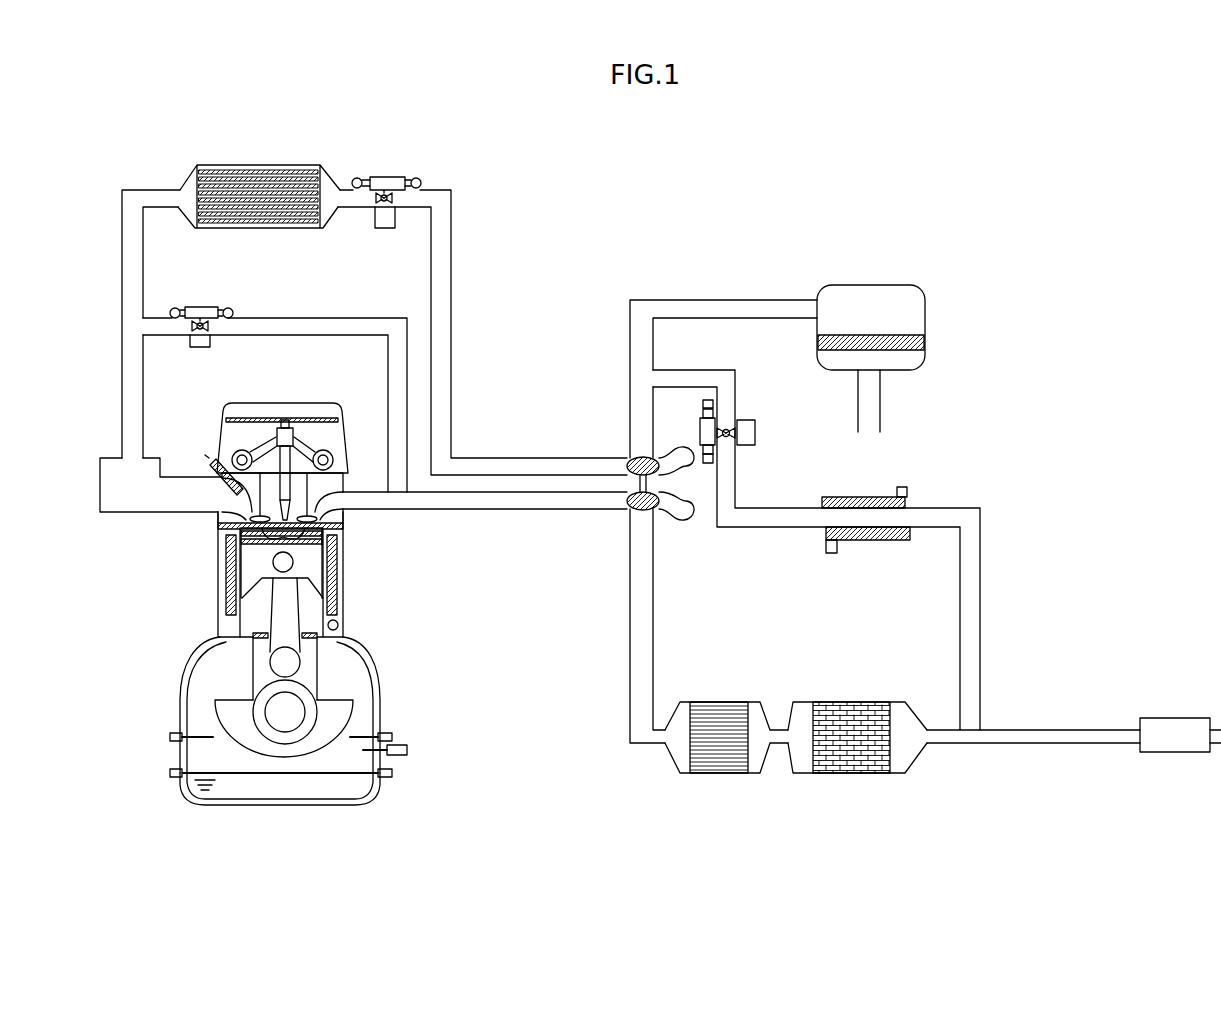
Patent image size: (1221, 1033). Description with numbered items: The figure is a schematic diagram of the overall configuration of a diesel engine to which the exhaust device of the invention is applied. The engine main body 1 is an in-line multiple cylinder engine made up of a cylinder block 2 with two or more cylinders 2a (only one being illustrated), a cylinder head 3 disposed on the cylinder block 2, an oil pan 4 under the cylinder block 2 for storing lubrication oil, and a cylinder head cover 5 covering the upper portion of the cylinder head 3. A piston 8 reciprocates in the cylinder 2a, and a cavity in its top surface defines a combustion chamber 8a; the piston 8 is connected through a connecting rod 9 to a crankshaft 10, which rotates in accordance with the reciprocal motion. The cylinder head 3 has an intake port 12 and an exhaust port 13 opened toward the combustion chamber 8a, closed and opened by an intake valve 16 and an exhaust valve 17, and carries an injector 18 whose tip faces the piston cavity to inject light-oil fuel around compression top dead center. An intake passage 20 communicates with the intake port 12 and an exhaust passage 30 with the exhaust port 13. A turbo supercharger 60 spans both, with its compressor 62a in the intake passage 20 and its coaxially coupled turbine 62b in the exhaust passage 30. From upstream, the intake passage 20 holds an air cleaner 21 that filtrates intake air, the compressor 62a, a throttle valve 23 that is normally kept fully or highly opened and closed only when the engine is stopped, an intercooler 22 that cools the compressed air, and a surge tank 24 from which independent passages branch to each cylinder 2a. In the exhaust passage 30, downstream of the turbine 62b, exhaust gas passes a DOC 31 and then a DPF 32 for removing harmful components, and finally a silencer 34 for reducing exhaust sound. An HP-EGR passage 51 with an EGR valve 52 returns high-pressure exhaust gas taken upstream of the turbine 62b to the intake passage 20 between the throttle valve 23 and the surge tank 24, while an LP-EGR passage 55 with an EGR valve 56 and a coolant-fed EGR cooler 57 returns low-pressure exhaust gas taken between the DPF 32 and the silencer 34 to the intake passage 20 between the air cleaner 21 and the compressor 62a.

The engine main body 1 is at (157, 756).
The cylinder block 2 is at (183, 714).
The cylinder 2a is at (312, 612).
The cylinder head 3 is at (346, 478).
The oil pan 4 is at (202, 804).
The cylinder head cover 5 is at (330, 405).
The piston 8 is at (252, 572).
The combustion chamber 8a is at (326, 548).
The connecting rod 9 is at (278, 622).
The crankshaft 10 is at (285, 720).
The intake port 12 is at (238, 503).
The exhaust port 13 is at (338, 514).
The intake valve 16 is at (242, 540).
The exhaust valve 17 is at (303, 545).
The injector 18 is at (302, 446).
The intake passage 20 is at (455, 300).
The air cleaner 21 is at (865, 295).
The intercooler 22 is at (258, 166).
The throttle valve 23 is at (381, 177).
The surge tank 24 is at (108, 514).
The exhaust passage 30 is at (628, 724).
The DOC 31 is at (722, 775).
The DPF 32 is at (852, 775).
The silencer 34 is at (1165, 720).
The HP-EGR passage 51 is at (240, 335).
The EGR valve 52 is at (222, 307).
The LP-EGR passage 55 is at (973, 688).
The EGR valve 56 is at (736, 414).
The EGR cooler 57 is at (846, 504).
The turbo supercharger 60 is at (589, 438).
The compressor 62a is at (628, 462).
The turbine 62b is at (628, 508).